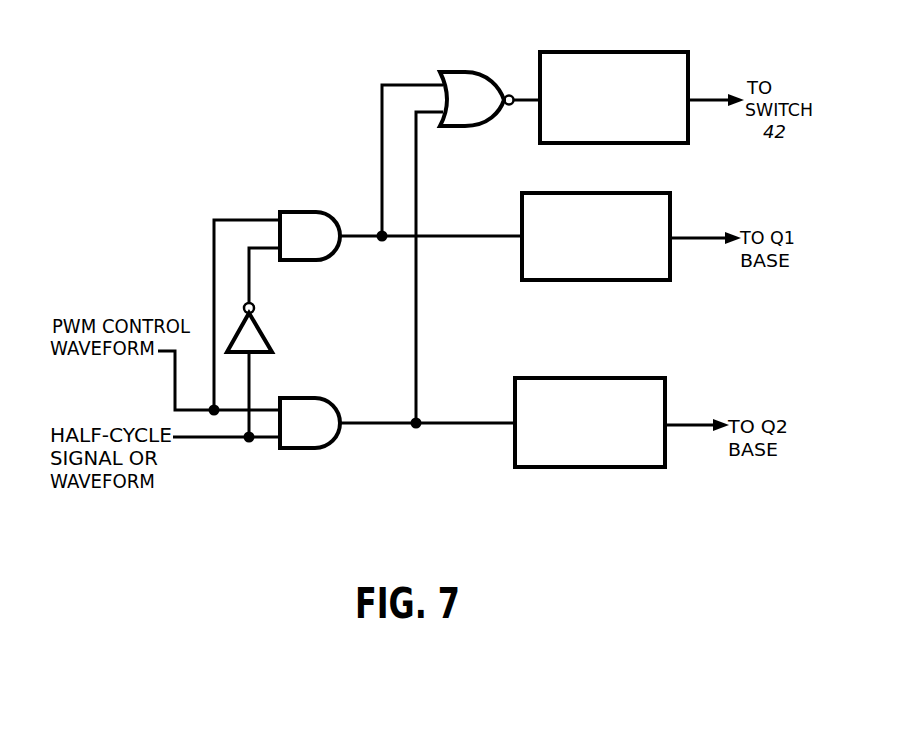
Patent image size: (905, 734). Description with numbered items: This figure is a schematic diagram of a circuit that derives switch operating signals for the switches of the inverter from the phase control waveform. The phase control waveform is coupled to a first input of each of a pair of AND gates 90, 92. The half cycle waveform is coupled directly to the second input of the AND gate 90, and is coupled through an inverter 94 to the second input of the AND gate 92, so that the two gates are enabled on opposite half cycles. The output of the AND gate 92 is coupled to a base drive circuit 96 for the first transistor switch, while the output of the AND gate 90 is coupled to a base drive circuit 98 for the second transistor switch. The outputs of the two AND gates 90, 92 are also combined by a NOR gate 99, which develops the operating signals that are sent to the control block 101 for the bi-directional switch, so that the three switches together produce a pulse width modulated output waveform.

The AND gate 90 is at (320, 444).
The AND gate 92 is at (316, 212).
The inverter 94 is at (262, 331).
The base drive circuit 96 is at (606, 282).
The base drive circuit 98 is at (632, 469).
The NOR gate 99 is at (468, 88).
The control for switch 42 101 is at (618, 58).